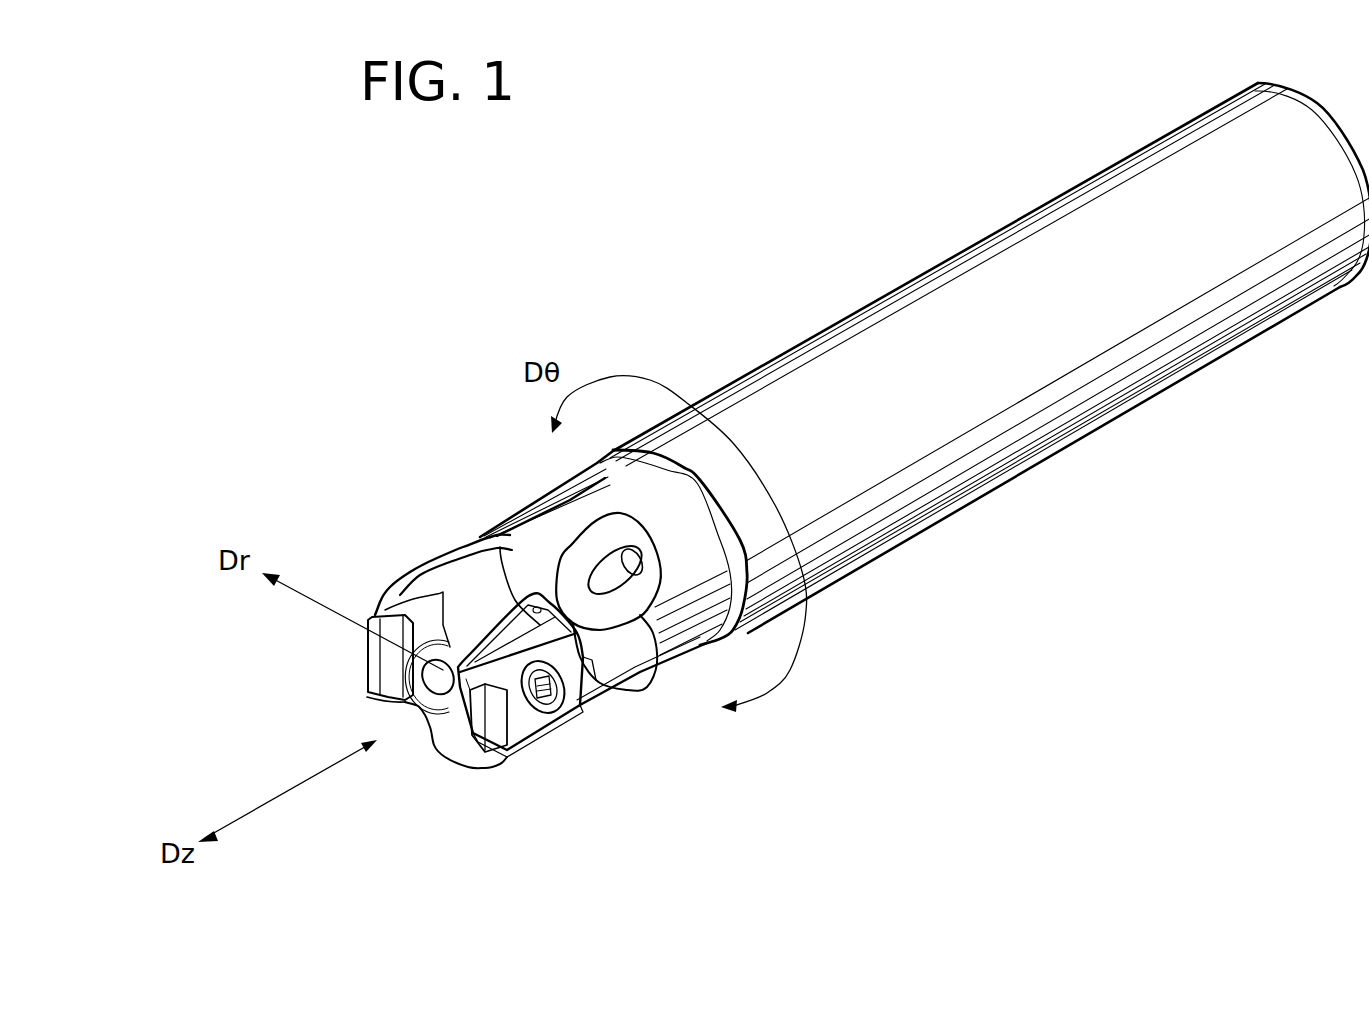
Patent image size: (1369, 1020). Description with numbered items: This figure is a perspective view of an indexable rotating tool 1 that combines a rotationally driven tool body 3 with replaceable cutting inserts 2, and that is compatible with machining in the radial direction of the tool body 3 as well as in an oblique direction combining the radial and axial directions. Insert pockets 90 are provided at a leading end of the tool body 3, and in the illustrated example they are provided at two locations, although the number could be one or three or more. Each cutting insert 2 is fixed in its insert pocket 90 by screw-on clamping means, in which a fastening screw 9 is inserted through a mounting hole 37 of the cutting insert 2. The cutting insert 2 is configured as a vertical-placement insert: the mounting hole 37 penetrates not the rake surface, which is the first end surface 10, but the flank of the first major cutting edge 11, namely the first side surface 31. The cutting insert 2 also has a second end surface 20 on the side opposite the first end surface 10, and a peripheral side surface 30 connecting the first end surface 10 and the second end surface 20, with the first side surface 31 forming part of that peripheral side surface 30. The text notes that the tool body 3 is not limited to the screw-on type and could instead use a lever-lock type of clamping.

The rotating tool 1 is at (983, 643).
The cutting insert 2 is at (352, 677).
The tool body 3 is at (756, 358).
The fastening screw 9 is at (567, 694).
The first end surface 10 is at (437, 733).
The first major cutting edge 11 is at (512, 640).
The second end surface 20 is at (511, 718).
The peripheral side surface 30 is at (486, 741).
The first side surface 31 is at (482, 748).
The mounting hole 37 is at (532, 702).
The insert pocket 90 is at (373, 617).